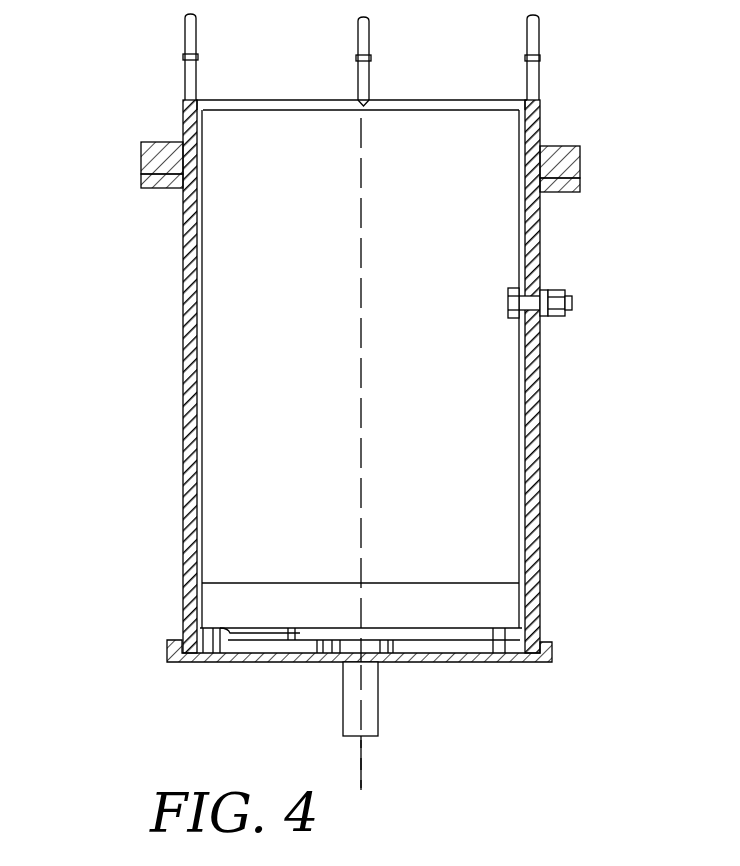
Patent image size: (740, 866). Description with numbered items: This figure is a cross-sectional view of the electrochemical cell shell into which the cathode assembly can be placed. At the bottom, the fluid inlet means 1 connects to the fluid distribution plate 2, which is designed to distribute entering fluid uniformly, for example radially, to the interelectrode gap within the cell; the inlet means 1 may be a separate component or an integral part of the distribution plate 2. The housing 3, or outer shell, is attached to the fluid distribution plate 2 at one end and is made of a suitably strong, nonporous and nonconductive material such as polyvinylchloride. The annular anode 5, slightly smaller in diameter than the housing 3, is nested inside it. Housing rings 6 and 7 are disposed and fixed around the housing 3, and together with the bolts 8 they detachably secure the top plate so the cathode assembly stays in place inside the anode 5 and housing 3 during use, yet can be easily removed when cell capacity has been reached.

The fluid inlet means 1 is at (377, 705).
The fluid distribution plate 2 is at (552, 657).
The housing 3 is at (538, 497).
The annular anode 5 is at (525, 375).
The housing ring 6 is at (580, 150).
The housing ring 7 is at (580, 183).
The bolts 8 is at (188, 34).